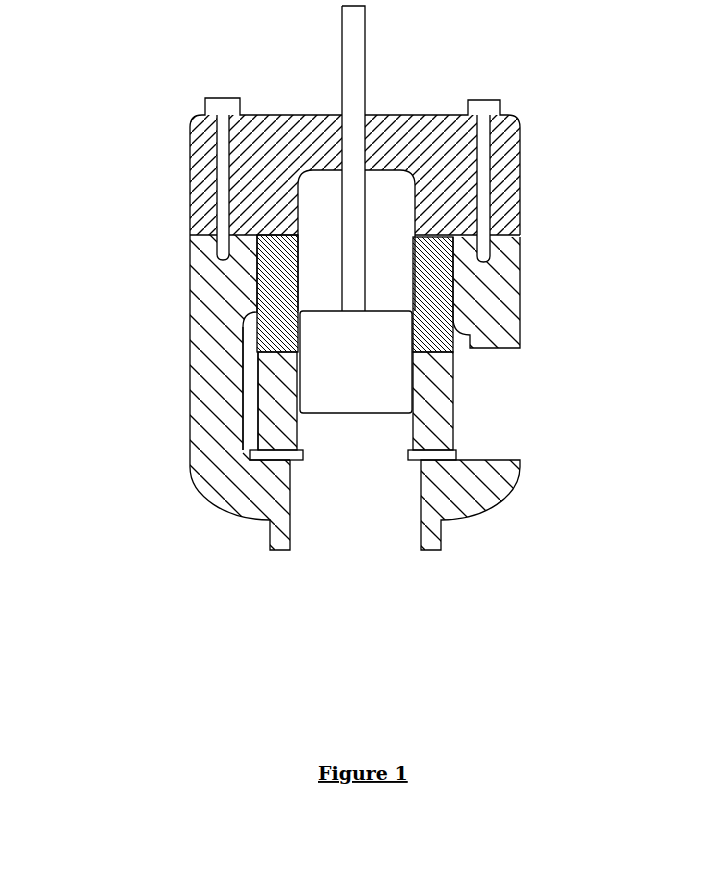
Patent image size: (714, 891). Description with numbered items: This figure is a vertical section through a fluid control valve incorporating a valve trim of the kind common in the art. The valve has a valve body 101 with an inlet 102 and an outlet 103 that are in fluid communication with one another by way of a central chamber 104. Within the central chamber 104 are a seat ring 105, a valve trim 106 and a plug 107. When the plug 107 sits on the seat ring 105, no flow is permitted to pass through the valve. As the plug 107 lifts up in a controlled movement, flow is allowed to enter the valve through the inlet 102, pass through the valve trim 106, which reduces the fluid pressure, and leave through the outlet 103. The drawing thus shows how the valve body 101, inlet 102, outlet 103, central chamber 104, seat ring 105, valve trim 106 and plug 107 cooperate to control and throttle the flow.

The valve body 101 is at (190, 310).
The inlet 102 is at (345, 567).
The outlet 103 is at (507, 425).
The central chamber 104 is at (240, 403).
The seat ring 105 is at (277, 487).
The valve trim 106 is at (254, 437).
The plug 107 is at (340, 390).